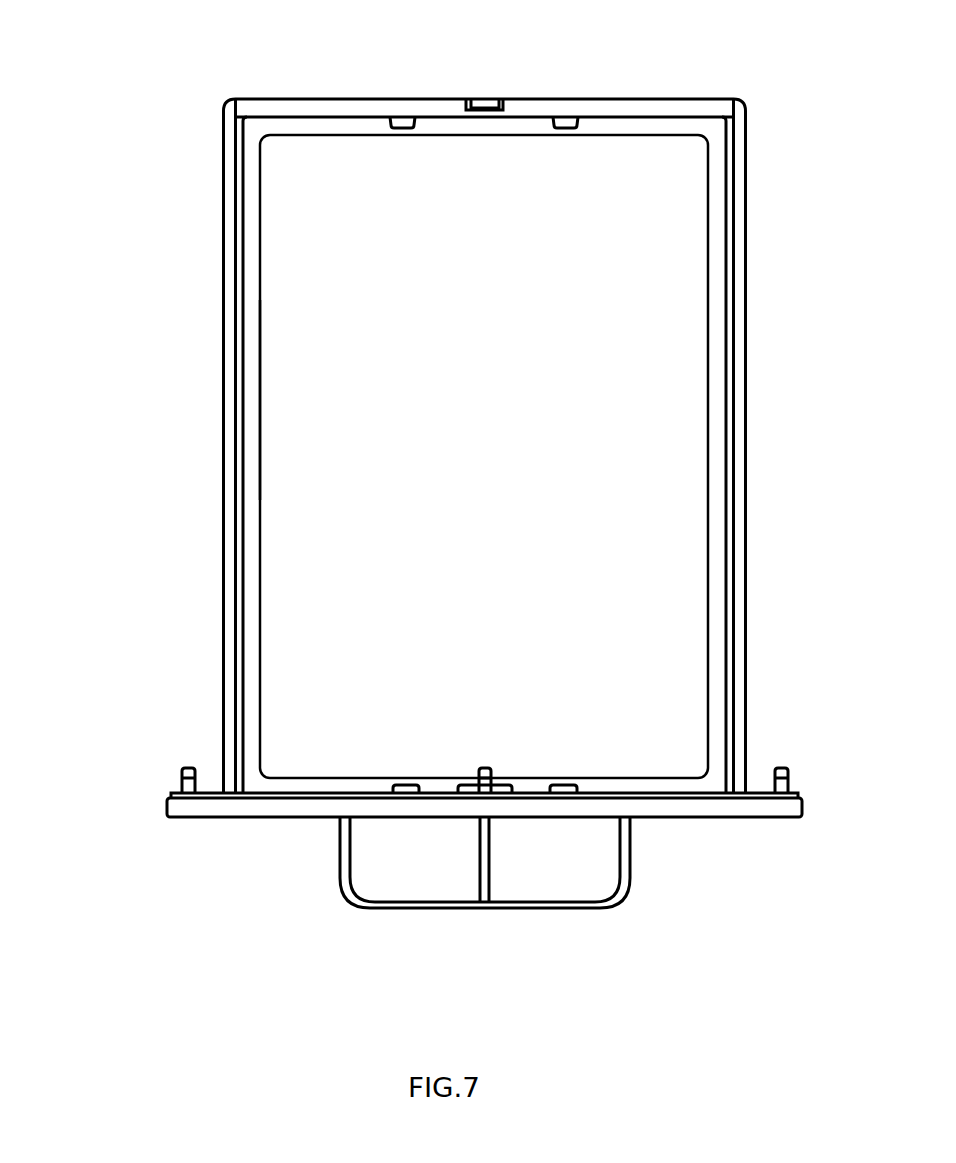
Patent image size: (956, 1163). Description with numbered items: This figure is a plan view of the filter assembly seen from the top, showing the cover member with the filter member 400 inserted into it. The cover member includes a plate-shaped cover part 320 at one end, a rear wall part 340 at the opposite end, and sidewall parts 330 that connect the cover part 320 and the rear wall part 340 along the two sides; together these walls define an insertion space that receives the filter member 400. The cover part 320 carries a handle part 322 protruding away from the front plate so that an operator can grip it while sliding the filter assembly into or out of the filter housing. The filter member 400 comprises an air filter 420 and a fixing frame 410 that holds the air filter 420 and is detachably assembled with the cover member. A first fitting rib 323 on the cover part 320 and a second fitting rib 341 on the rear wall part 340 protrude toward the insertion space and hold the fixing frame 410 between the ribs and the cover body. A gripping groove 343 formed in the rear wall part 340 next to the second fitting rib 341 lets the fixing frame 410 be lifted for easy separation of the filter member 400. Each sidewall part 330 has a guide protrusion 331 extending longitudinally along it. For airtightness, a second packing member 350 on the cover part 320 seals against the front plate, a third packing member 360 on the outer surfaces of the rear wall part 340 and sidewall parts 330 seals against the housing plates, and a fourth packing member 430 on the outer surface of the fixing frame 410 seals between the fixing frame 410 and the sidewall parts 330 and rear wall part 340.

The cover part 320 is at (255, 807).
The handle part 322 is at (479, 908).
The first fitting rib 323 is at (405, 785).
The sidewall part 330 is at (230, 408).
The guide protrusion 331 is at (237, 343).
The rear wall part 340 is at (645, 108).
The second fitting rib 341 is at (403, 120).
The gripping groove 343 is at (483, 100).
The second packing member 350 is at (205, 793).
The third packing member 360 is at (222, 520).
The filter member 400 is at (394, 455).
The fixing frame 410 is at (252, 232).
The air filter 420 is at (282, 182).
The fourth packing member 430 is at (135, 182).